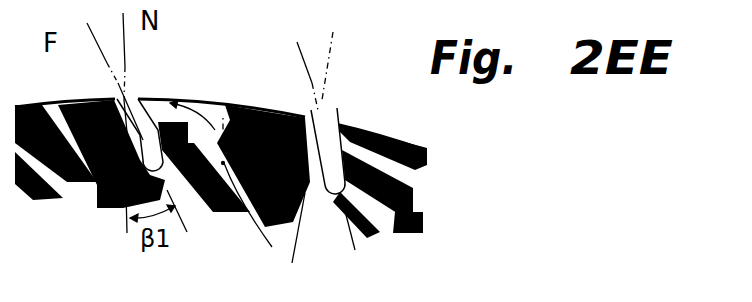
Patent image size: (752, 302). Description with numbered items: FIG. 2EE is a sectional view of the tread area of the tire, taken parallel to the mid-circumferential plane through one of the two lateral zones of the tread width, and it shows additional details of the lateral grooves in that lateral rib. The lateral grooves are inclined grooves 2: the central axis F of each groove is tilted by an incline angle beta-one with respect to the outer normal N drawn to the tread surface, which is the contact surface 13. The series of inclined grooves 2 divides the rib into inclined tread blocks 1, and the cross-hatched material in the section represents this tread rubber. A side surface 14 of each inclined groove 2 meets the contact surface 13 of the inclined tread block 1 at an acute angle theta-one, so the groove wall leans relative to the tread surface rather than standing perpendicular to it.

The inclined tread block 1 is at (248, 221).
The inclined groove 2 is at (400, 113).
The contact surface 13 is at (203, 110).
The side surface 14 is at (185, 75).